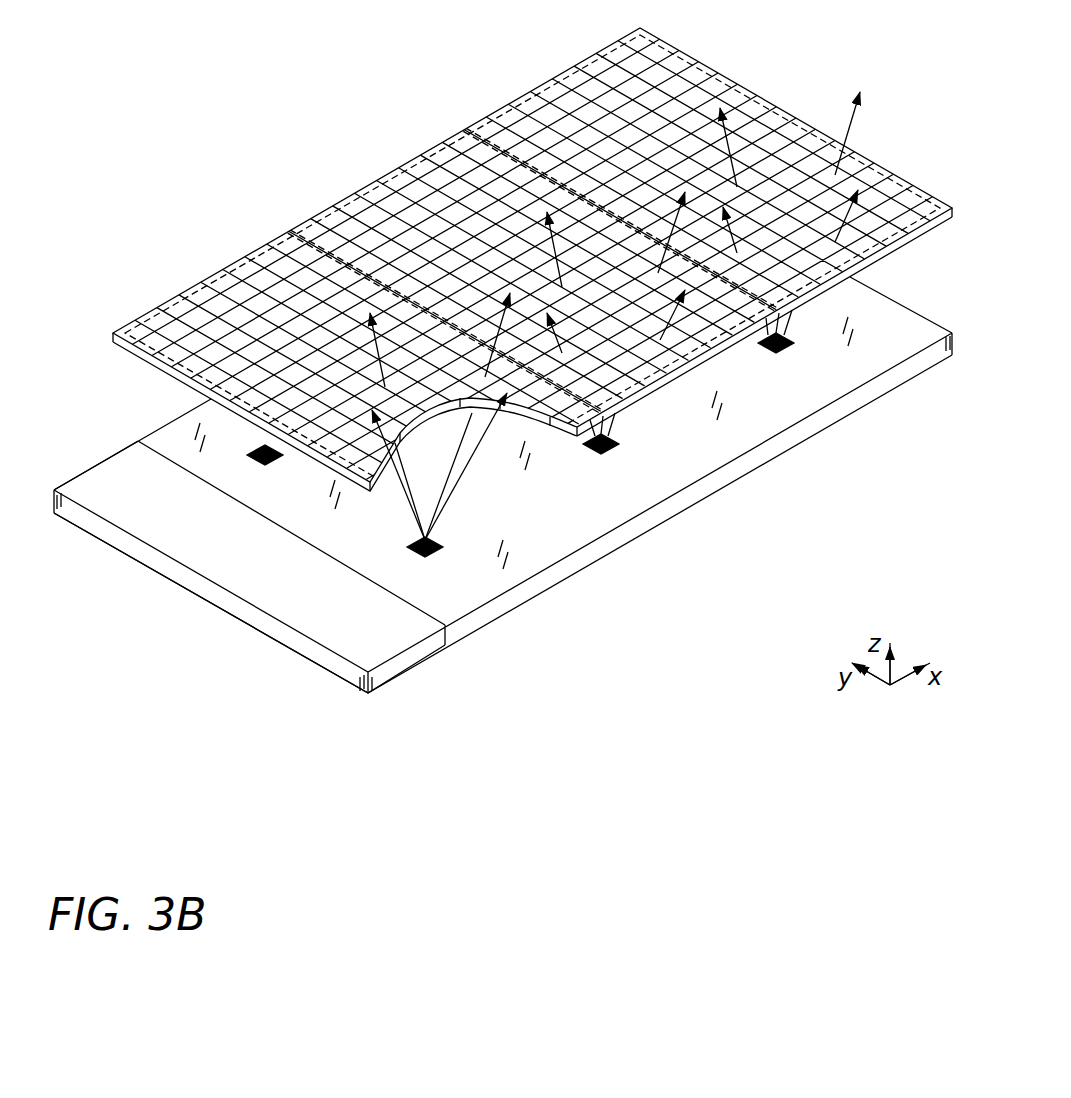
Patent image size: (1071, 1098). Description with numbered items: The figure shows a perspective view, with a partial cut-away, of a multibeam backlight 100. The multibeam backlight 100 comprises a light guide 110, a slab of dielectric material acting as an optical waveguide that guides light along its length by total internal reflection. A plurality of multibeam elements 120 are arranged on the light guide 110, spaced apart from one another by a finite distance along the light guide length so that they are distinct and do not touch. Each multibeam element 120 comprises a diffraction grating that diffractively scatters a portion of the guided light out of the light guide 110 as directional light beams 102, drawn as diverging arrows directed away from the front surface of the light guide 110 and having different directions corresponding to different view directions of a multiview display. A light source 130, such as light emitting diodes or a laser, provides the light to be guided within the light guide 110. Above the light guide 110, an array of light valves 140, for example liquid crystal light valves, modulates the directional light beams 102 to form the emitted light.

The multibeam backlight 100 is at (170, 403).
The directional light beams 102 is at (870, 112).
The light guide 110 is at (725, 473).
The multibeam elements 120 is at (442, 555).
The light source 130 is at (407, 657).
The array of light valves 140 is at (272, 255).